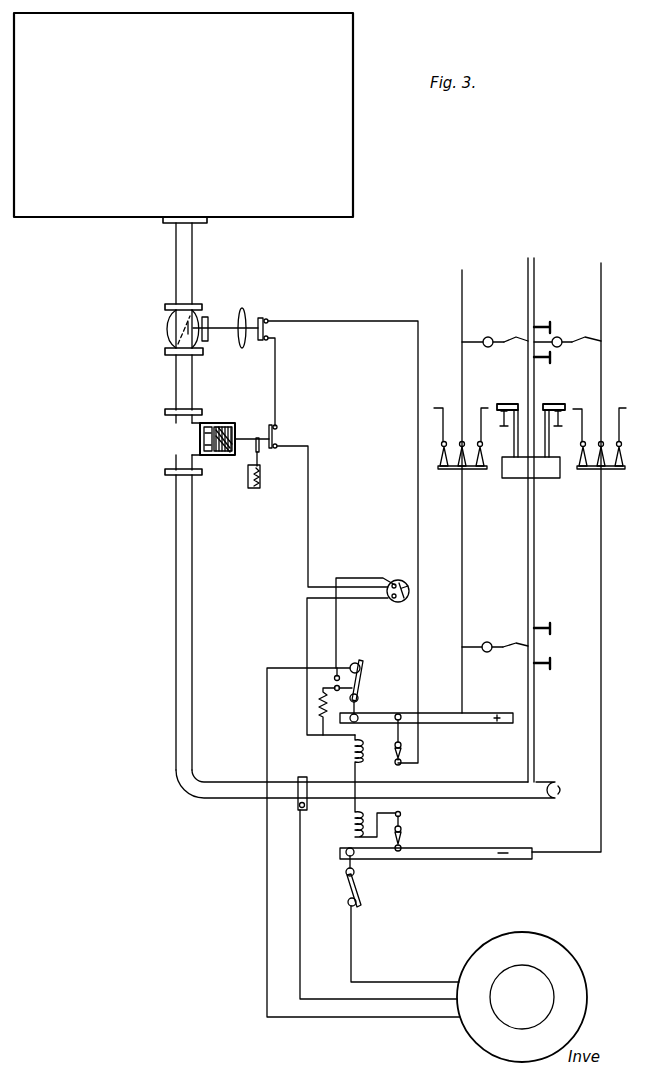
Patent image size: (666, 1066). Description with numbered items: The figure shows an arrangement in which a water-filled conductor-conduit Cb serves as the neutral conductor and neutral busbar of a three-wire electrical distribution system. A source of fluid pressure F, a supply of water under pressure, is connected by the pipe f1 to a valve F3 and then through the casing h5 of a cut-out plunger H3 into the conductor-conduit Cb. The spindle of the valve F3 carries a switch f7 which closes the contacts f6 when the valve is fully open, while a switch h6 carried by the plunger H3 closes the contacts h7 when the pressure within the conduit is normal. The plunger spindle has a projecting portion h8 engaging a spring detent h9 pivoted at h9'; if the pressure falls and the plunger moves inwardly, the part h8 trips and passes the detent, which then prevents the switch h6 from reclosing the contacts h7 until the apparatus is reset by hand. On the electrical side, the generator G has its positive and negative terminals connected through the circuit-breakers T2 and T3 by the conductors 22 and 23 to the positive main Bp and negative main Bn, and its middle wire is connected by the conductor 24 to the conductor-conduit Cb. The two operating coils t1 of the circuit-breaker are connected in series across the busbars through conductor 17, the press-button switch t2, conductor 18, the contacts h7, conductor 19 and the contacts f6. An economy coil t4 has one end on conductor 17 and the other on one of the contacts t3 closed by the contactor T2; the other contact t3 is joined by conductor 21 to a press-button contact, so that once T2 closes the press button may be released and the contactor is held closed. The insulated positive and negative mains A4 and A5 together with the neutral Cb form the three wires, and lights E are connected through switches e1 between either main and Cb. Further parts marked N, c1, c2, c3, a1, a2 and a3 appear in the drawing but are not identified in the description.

The source of fluid pressure F is at (183, 118).
The pipe f1 is at (176, 262).
The valve F3 is at (168, 326).
The switch f7 is at (248, 318).
The contacts f6 is at (268, 323).
The conductor 19 is at (277, 378).
The cut-out plunger H3 is at (200, 437).
The casing h5 is at (222, 424).
The switch h6 is at (262, 430).
The contacts h7 is at (277, 446).
The projecting portion h8 is at (255, 447).
The spring detent h9 is at (269, 476).
The pivot h9' is at (250, 495).
The conductor 18 is at (309, 556).
The conductor-conduit Cb is at (176, 554).
The neutral terminal N is at (503, 789).
The conductor 17 is at (307, 630).
The conductor 21 is at (337, 627).
The press-button switch t2 is at (395, 602).
The circuit-breaker T2 is at (362, 675).
The contacts t3 is at (335, 680).
The economy coil t4 is at (322, 712).
The operating coils t1 is at (345, 748).
The positive main Bp is at (447, 700).
The negative main Bn is at (488, 858).
The circuit-breaker T3 is at (357, 898).
The conductor 22 is at (268, 912).
The conductor 23 is at (352, 968).
The conductor 24 is at (300, 958).
The generator G is at (522, 997).
The positive insulated main A4 is at (463, 580).
The negative insulated main A5 is at (600, 573).
The control rod c2 is at (534, 386).
The bracket c1 is at (514, 404).
The bracket c3 is at (559, 406).
The lights E is at (489, 337).
The switches e1 is at (512, 332).
The contact post a1 is at (446, 399).
The contact post a2 is at (467, 381).
The contact post a3 is at (486, 403).